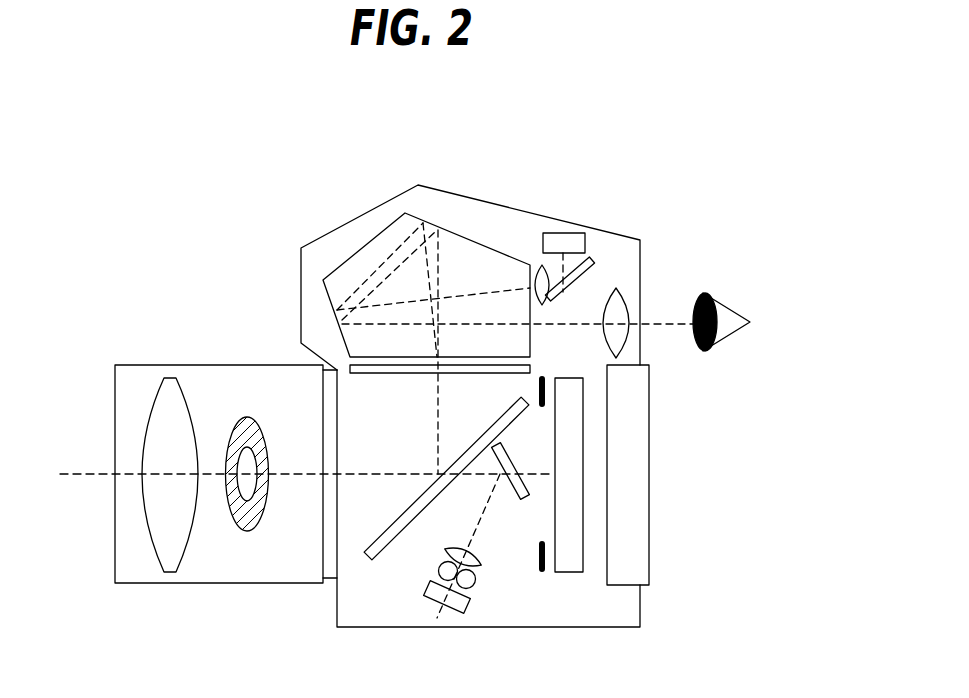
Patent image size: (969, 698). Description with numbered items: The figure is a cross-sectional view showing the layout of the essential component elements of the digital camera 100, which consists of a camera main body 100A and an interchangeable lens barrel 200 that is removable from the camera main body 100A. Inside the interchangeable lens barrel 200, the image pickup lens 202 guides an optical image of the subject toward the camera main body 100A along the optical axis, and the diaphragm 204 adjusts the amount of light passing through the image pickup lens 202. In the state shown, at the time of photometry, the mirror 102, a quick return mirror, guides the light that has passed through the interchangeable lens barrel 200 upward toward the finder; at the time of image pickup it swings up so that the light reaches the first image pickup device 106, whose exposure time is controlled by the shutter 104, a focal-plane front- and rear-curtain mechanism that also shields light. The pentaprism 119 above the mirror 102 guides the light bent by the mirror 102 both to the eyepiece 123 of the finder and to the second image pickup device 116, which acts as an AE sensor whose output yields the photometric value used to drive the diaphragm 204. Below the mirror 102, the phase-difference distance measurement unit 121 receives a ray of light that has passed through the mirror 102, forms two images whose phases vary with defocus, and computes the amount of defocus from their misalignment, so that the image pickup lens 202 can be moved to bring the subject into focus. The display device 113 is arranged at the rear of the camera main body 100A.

The digital camera 100 is at (472, 152).
The camera main body 100A is at (640, 611).
The mirror 102 is at (385, 528).
The shutter 104 is at (542, 573).
The first image pickup device 106 is at (572, 573).
The display device 113 is at (649, 480).
The second image pickup device 116 is at (566, 233).
The pentaprism 119 is at (353, 253).
The phase-difference distance measurement unit 121 is at (425, 590).
The eyepiece 123 is at (622, 295).
The interchangeable lens barrel 200 is at (220, 585).
The image pickup lens 202 is at (168, 378).
The diaphragm 204 is at (248, 418).